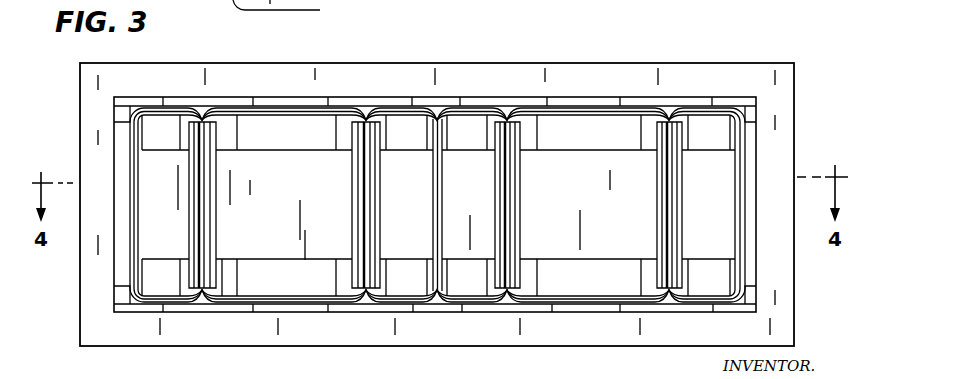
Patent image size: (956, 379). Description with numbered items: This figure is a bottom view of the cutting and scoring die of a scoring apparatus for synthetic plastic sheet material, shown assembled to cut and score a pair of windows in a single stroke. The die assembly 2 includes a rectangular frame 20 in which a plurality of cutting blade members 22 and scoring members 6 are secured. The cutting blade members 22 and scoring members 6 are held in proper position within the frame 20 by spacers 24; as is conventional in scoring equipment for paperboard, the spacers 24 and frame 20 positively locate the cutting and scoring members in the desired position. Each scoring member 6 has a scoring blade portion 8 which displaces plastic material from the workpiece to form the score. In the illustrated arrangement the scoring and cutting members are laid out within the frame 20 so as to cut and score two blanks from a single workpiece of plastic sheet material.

The die assembly 2 is at (477, 60).
The scoring member 6 is at (217, 239).
The scoring blade portion 8 is at (382, 199).
The rectangular frame 20 is at (732, 63).
The cutting blade members 22 is at (340, 108).
The spacers 24 is at (277, 157).